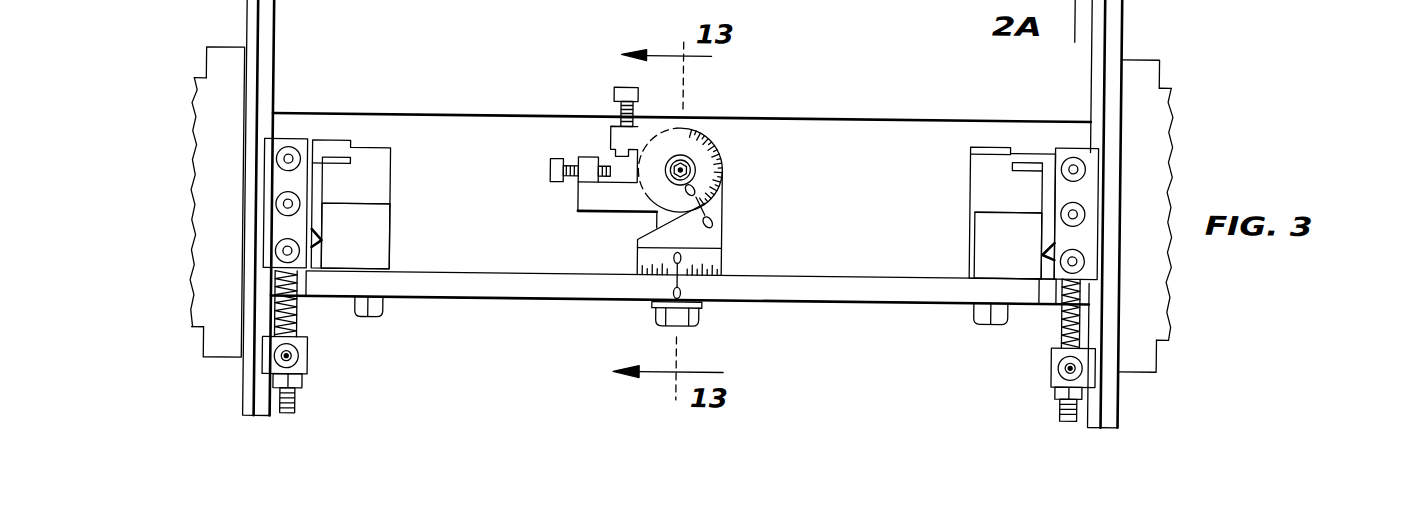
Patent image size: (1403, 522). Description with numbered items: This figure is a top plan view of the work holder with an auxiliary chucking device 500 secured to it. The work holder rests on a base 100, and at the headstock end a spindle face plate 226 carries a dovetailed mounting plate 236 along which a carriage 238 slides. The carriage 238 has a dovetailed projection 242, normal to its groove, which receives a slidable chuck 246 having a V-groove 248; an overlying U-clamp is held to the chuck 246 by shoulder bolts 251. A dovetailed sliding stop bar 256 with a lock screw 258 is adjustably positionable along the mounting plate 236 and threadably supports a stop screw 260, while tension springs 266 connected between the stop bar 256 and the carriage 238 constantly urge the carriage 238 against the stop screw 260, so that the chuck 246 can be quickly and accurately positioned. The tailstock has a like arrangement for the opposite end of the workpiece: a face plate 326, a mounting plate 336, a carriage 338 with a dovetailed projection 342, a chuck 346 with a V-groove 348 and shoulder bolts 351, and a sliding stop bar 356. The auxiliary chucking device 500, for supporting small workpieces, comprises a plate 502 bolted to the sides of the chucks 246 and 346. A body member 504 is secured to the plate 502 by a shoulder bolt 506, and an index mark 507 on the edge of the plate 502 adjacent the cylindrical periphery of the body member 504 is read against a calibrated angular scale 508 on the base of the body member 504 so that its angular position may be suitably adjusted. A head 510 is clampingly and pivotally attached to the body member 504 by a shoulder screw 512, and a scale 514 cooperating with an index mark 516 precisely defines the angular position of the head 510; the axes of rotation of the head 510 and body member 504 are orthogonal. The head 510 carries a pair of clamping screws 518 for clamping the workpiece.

The base 100 is at (474, 117).
The spindle face plate 226 is at (1146, 55).
The dovetailed mounting plate 236 is at (1090, 63).
The carriage 238 is at (1076, 143).
The dovetailed projection 242 is at (1043, 228).
The slidable chuck 246 is at (986, 144).
The V-groove 248 is at (975, 197).
The shoulder bolts 251 is at (976, 309).
The dovetailed sliding stop bar 256 is at (1055, 366).
The lock screw 258 is at (1082, 365).
The stop screw 260 is at (1062, 404).
The tension springs 266 is at (1063, 311).
The spindle face plate (tailstock) 326 is at (208, 63).
The dovetailed mounting plate (tailstock) 336 is at (276, 32).
The carriage (tailstock) 338 is at (284, 142).
The dovetailed projection (tailstock) 342 is at (320, 234).
The slidable chuck (tailstock) 346 is at (371, 143).
The V-groove (tailstock) 348 is at (380, 188).
The shoulder bolts (tailstock) 351 is at (380, 321).
The dovetailed sliding stop bar (tailstock) 356 is at (310, 354).
The auxiliary chucking device 500 is at (723, 145).
The plate 502 is at (552, 296).
The body member 504 is at (710, 238).
The shoulder bolt 506 is at (700, 320).
The index mark 507 is at (676, 282).
The calibrated angular scale 508 is at (638, 268).
The head 510 is at (580, 203).
The shoulder screw 512 is at (683, 153).
The scale 514 is at (722, 170).
The index mark 516 is at (706, 211).
The clamping screws 518 is at (553, 160).